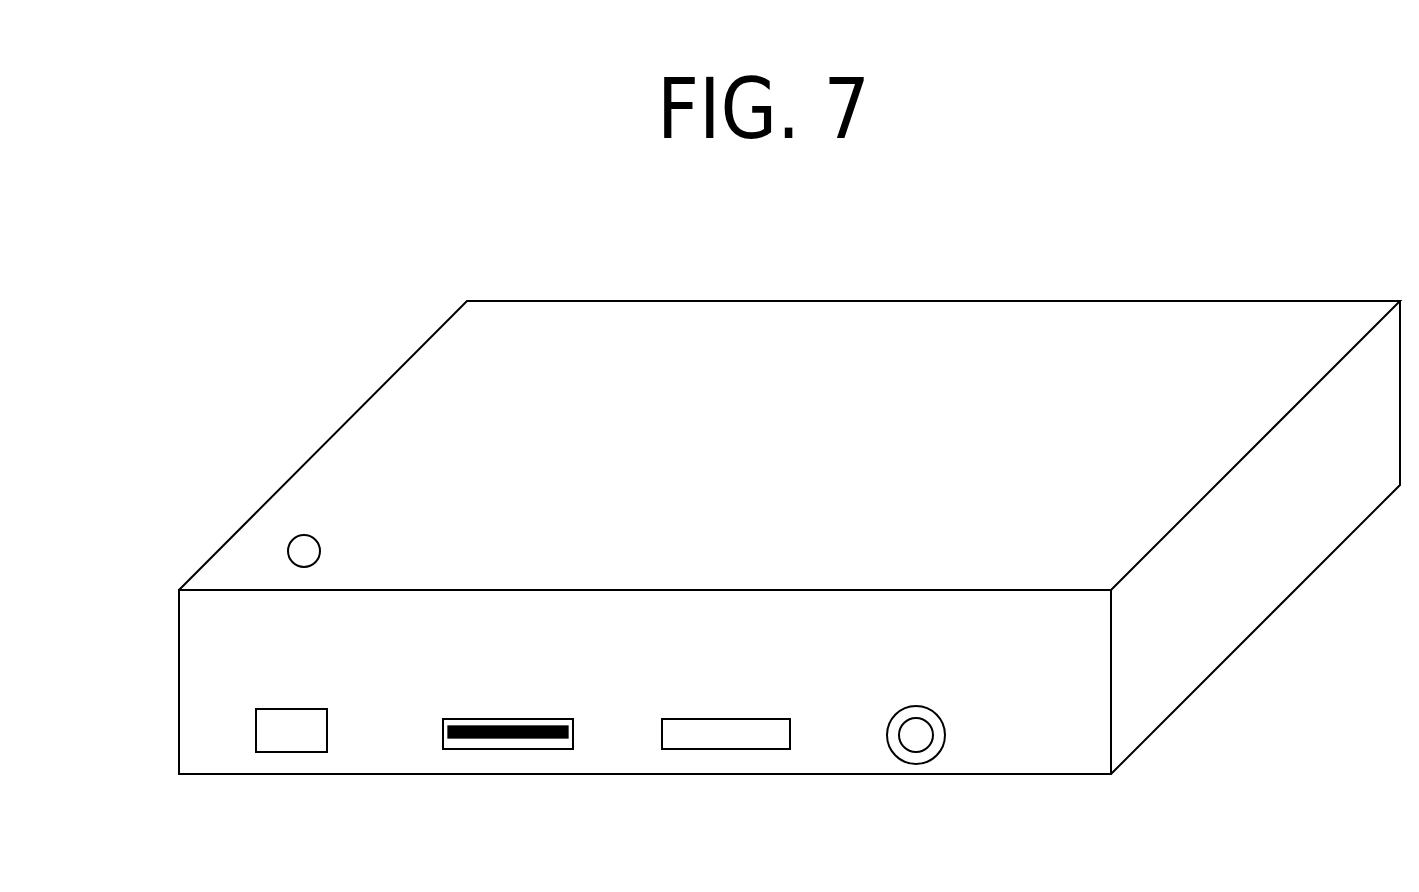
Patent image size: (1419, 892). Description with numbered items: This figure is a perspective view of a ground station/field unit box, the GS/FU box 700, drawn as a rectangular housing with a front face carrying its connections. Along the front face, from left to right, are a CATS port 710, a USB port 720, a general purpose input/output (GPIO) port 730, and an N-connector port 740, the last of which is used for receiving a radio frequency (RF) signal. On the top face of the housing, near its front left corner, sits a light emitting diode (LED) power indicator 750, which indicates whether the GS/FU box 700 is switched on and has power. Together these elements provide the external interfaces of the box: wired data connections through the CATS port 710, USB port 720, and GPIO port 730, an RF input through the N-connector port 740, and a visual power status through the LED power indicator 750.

The GS/FU box 700 is at (307, 202).
The CATS port 710 is at (256, 730).
The USB port 720 is at (507, 719).
The general purpose input/output (GPIO) port 730 is at (723, 719).
The N-connector port 740 is at (893, 712).
The light emitting diode (LED) power indicator 750 is at (288, 547).